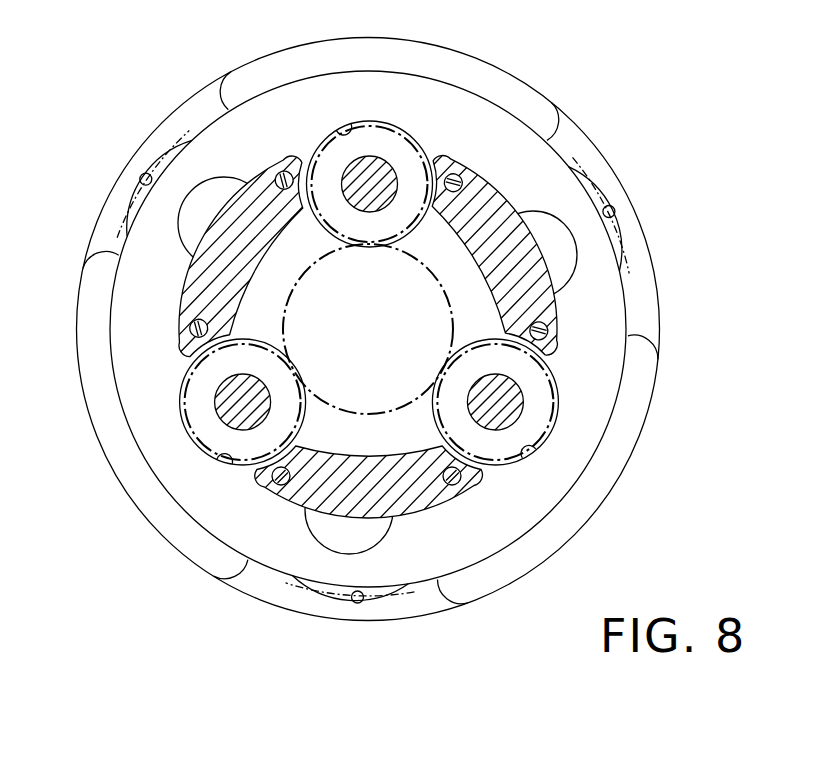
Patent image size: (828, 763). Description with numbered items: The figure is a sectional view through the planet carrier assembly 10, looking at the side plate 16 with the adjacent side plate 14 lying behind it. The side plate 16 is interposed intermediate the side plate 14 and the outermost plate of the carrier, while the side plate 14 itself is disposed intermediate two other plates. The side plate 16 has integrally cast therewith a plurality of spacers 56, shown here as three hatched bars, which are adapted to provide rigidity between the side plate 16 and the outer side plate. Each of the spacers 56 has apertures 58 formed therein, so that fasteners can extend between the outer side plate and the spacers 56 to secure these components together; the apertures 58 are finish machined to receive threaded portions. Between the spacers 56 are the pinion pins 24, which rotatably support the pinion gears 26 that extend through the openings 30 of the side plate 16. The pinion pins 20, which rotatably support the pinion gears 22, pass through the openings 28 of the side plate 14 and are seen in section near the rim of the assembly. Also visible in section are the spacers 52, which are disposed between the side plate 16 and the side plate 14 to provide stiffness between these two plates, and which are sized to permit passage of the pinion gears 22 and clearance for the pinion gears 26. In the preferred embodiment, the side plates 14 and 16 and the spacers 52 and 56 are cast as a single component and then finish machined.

The planet carrier assembly 10 is at (672, 106).
The side plate 14 is at (184, 102).
The side plate 16 is at (616, 418).
The pinion pins 20 is at (550, 230).
The pinion gears 22 is at (632, 233).
The pinion pins 24 is at (386, 176).
The pinion gears 26 is at (391, 122).
The openings 28 is at (615, 210).
The openings 30 is at (347, 128).
The spacers 52 is at (522, 98).
The spacers 56 is at (500, 207).
The apertures 58 is at (282, 172).